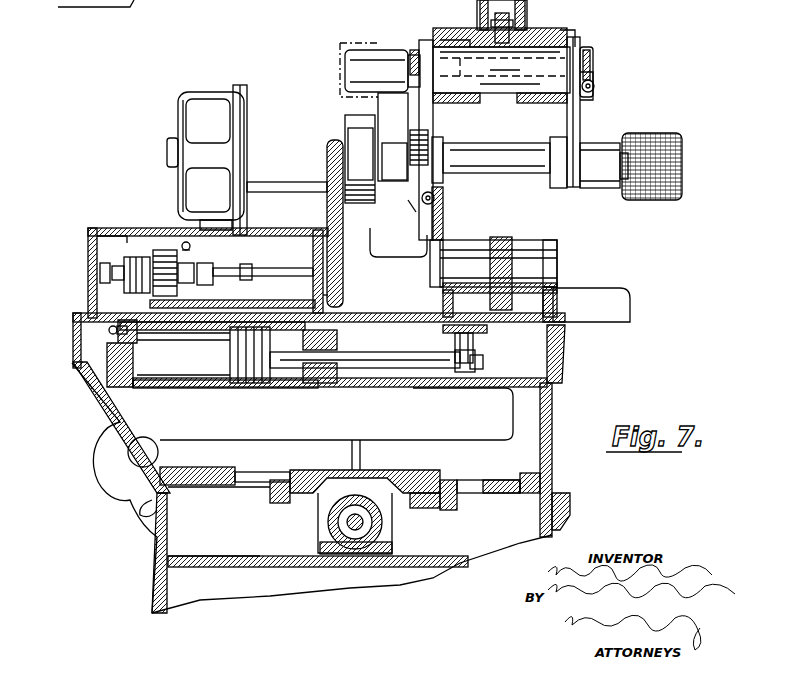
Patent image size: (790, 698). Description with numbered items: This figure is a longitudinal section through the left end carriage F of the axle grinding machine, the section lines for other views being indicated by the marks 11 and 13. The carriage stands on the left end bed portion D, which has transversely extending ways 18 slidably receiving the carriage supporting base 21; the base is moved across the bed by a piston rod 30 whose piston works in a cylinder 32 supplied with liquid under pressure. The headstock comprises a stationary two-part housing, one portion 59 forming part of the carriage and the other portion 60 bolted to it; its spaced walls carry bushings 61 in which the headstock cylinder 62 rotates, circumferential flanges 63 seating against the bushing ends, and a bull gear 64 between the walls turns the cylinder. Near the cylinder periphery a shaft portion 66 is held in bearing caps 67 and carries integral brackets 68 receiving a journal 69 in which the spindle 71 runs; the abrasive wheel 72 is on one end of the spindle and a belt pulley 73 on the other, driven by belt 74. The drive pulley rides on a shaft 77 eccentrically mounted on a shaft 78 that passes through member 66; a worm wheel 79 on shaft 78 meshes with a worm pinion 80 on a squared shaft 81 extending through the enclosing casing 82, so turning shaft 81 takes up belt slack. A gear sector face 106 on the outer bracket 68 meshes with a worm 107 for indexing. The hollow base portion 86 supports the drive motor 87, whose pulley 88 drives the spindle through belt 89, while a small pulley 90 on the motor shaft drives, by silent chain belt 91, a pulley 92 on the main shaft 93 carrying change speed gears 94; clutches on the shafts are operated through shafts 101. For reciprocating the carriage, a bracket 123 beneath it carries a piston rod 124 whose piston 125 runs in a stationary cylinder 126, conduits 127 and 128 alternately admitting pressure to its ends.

The section line 11- 11 is at (388, 328).
The section line 13- 13 is at (372, 245).
The ways 18 is at (270, 500).
The carriage supporting base 21 is at (117, 415).
The piston rod 30 is at (348, 522).
The cylinder 32 is at (372, 530).
The housing portion 59 is at (553, 302).
The housing portion 60 is at (540, 28).
The bushing 61 is at (470, 40).
The headstock cylinder 62 is at (550, 27).
The circumferential flange 63 is at (568, 35).
The bull gear 64 is at (500, 240).
The shaft portion 66 is at (520, 95).
The bearing cap 67 is at (557, 103).
The bracket 68 is at (575, 122).
The journal 69 is at (528, 173).
The spindle 71 is at (590, 182).
The abrasive wheel 72 is at (680, 143).
The belt pulley 73 is at (393, 165).
The belt 74 is at (414, 205).
The shaft 77 is at (417, 37).
The shaft 78 is at (486, 94).
The worm wheel 79 is at (592, 80).
The worm pinion 80 is at (621, 95).
The squared shaft 81 is at (593, 85).
The enclosing casing 82 is at (594, 55).
The hollow base portion 86 is at (88, 297).
The drive motor 87 is at (248, 92).
The pulley 88 is at (342, 115).
The belt 89 is at (350, 50).
The small-diametered pulley 90 is at (332, 143).
The silent chain belt 91 is at (328, 183).
The pulley 92 is at (328, 295).
The main shaft 93 is at (240, 270).
The gears 94 is at (127, 230).
The shaft 101 is at (180, 228).
The gear sector face 106 is at (398, 244).
The worm 107 is at (436, 212).
The bracket 123 is at (475, 348).
The piston rod 124 is at (397, 366).
The piston 125 is at (298, 387).
The cylinder 126 is at (210, 388).
The conduit 127 is at (110, 333).
The conduit 128 is at (353, 368).
The left end bed portion D is at (105, 566).
The carriage F is at (90, 230).